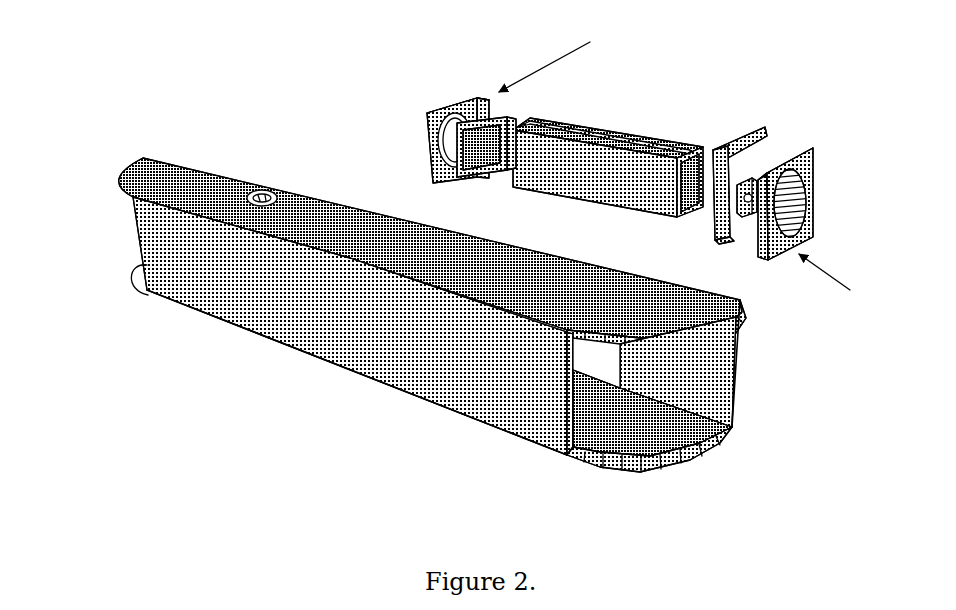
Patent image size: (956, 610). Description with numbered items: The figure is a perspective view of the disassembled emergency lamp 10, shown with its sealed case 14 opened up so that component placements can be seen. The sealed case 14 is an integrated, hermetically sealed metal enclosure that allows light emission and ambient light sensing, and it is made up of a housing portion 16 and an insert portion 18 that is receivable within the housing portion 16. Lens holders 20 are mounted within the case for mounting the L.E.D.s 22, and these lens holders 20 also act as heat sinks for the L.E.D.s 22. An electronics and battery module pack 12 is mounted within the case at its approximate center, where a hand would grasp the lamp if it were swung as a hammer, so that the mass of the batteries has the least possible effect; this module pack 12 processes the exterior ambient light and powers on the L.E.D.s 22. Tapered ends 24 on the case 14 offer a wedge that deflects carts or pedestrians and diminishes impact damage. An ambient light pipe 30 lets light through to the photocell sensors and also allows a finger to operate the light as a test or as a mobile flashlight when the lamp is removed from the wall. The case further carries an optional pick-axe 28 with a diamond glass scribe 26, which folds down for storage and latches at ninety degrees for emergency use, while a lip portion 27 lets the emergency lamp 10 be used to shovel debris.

The emergency lamp 10 is at (438, 292).
The electronics and battery module pack 12 is at (614, 165).
The sealed case 14 is at (184, 158).
The housing portion 16 is at (383, 373).
The insert portion 18 is at (717, 140).
The lens holders 20 is at (505, 121).
The L.E.D.s 22 is at (750, 202).
The tapered ends 24 is at (698, 469).
The diamond glass scribe 26 is at (603, 465).
The lip portion 27 is at (742, 388).
The pick-axe 28 is at (745, 305).
The ambient light pipe 30 is at (265, 188).